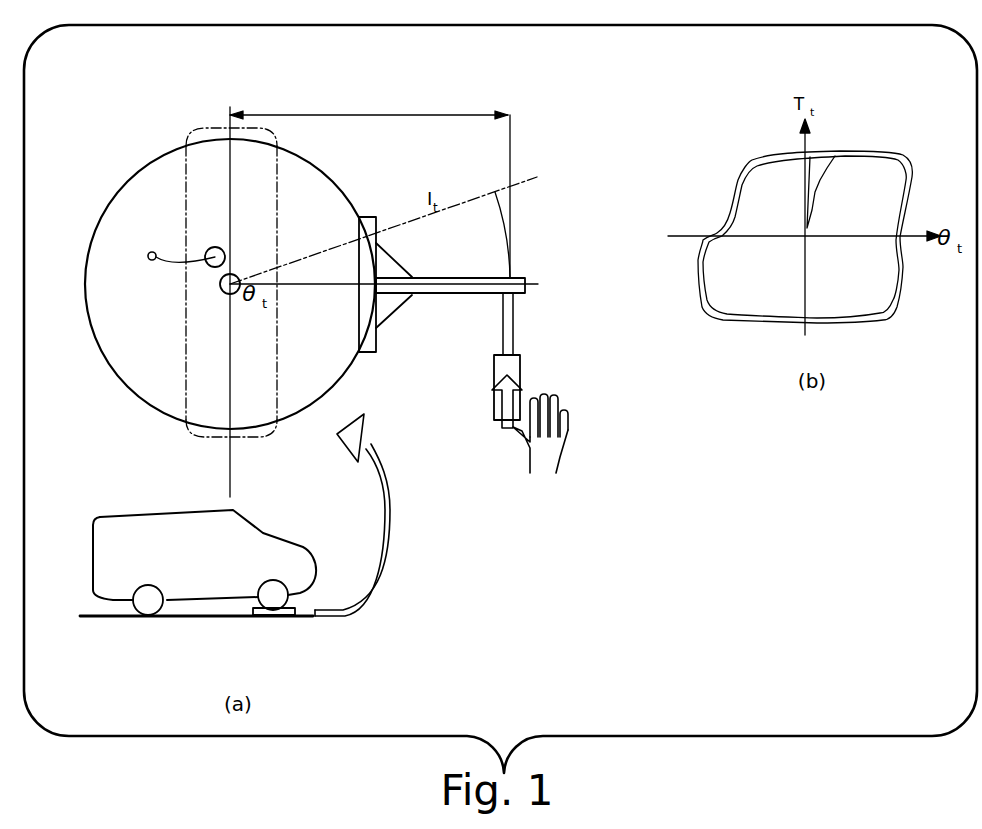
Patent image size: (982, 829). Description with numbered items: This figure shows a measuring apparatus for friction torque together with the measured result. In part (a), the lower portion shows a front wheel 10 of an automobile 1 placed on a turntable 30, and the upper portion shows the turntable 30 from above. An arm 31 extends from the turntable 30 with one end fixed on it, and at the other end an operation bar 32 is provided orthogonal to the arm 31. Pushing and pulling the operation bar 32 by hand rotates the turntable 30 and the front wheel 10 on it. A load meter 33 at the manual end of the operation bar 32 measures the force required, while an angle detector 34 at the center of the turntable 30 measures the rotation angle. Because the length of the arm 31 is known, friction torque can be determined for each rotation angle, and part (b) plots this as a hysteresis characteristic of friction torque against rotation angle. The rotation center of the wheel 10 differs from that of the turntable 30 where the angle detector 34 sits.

The automobile 1 is at (255, 520).
The front wheel 10 is at (212, 127).
The turntable 30 is at (336, 163).
The arm 31 is at (455, 289).
The operation bar 32 is at (513, 328).
The load meter 33 is at (515, 370).
The angle detector 34 is at (220, 290).